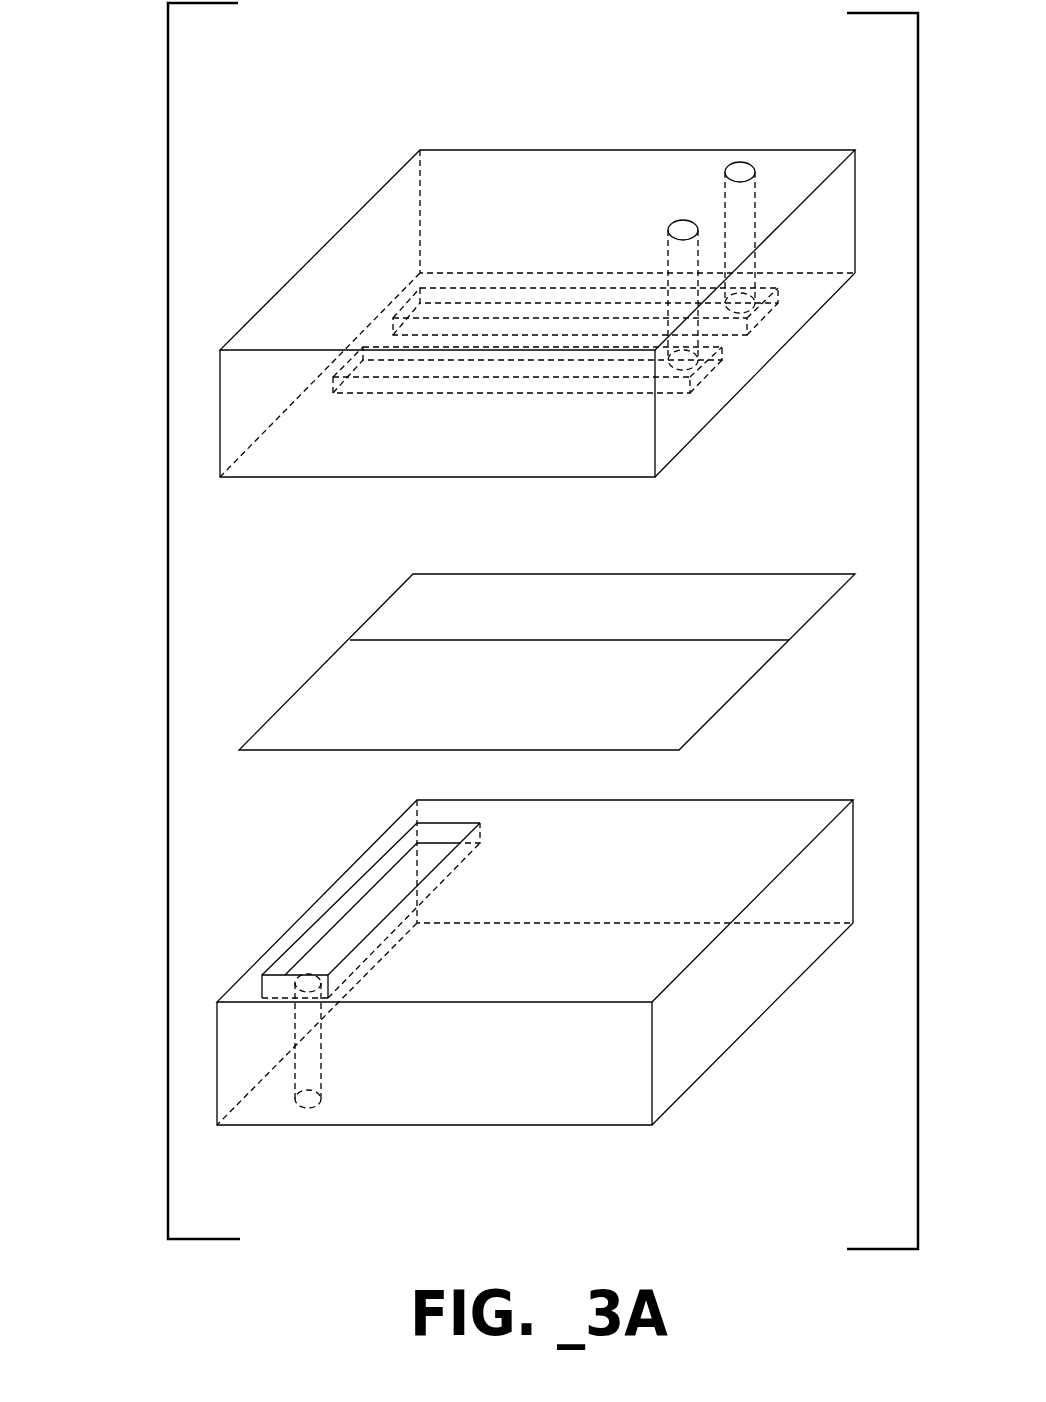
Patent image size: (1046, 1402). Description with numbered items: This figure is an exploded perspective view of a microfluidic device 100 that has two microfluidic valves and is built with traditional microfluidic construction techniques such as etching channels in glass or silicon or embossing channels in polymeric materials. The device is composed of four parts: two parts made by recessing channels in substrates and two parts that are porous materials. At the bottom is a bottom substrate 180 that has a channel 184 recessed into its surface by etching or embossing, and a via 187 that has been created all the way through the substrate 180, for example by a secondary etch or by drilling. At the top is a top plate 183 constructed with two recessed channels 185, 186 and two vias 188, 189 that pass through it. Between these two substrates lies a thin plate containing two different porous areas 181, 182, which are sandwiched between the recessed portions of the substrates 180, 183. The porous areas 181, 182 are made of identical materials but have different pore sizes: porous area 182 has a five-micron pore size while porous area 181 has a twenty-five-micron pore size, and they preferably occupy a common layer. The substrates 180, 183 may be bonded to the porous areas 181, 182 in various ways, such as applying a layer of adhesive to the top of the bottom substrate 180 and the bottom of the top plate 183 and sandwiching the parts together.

The microfluidic device 100 is at (152, 608).
The bottom substrate 180 is at (683, 1073).
The porous area 181 is at (706, 713).
The porous area 182 is at (782, 622).
The top plate 183 is at (675, 438).
The channel 184 is at (345, 913).
The recessed channel 185 is at (573, 305).
The recessed channel 186 is at (383, 367).
The via 187 is at (308, 1110).
The via 188 is at (740, 162).
The via 189 is at (683, 218).